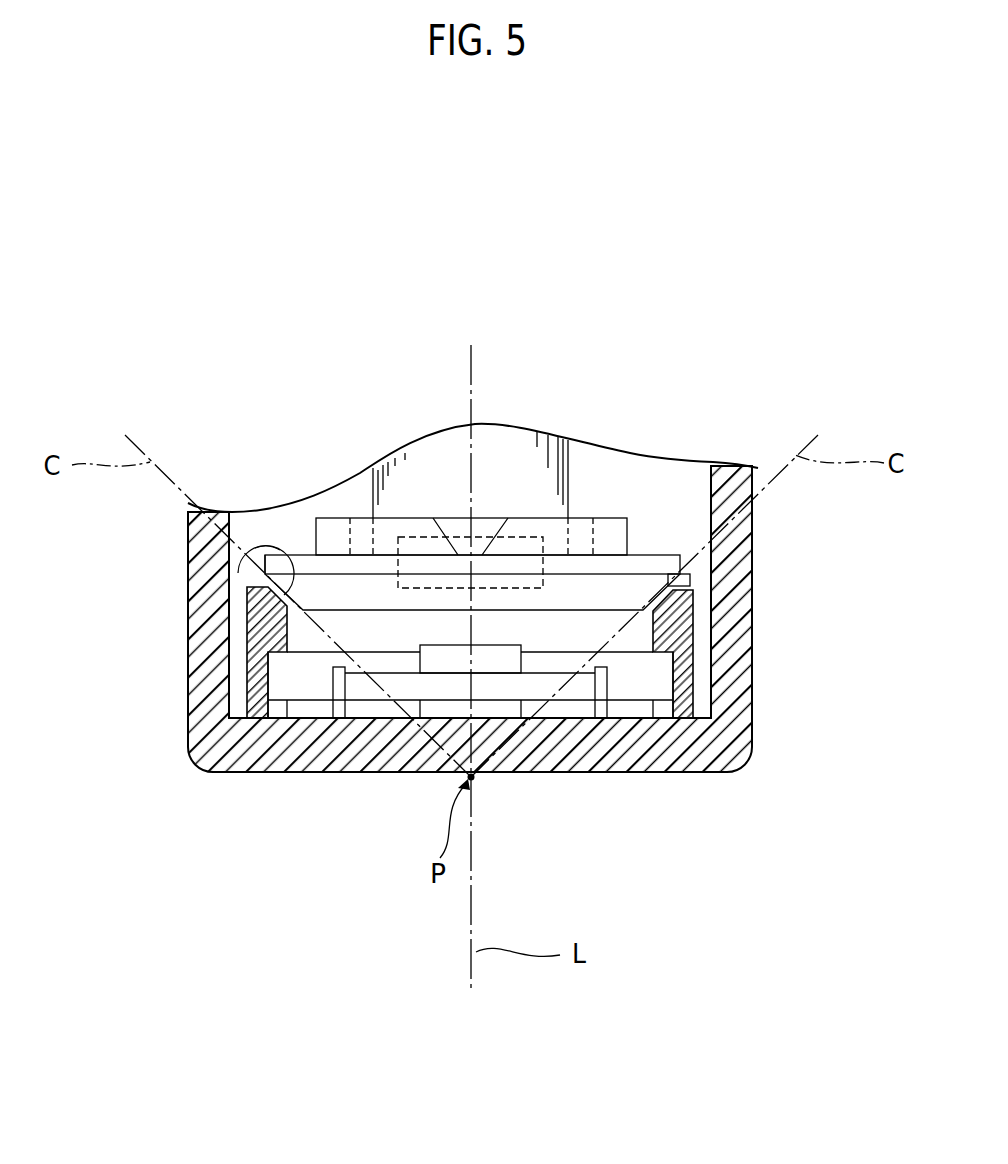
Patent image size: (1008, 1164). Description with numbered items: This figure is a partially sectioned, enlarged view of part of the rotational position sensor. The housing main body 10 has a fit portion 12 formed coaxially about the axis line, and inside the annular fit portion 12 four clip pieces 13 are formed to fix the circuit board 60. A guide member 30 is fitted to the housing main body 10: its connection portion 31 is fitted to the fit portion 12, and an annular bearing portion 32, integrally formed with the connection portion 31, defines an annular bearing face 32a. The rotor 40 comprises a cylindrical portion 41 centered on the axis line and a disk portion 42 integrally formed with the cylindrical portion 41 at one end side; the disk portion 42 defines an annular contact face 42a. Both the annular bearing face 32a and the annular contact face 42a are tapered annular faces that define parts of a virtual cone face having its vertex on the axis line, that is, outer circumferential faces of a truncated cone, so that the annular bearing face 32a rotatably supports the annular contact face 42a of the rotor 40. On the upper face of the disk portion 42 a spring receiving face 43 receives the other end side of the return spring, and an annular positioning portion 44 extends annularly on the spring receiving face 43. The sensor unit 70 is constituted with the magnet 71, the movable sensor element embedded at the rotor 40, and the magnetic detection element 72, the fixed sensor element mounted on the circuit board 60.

The housing main body 10 is at (685, 772).
The fit portion 12 is at (687, 645).
The clip pieces 13 is at (338, 675).
The guide member 30 is at (694, 590).
The connection portion 31 is at (272, 645).
The annular bearing portion 32 is at (236, 576).
The annular bearing face 32a is at (262, 546).
The rotor 40 is at (572, 478).
The cylindrical portion 41 is at (432, 458).
The disk portion 42 is at (292, 565).
The annular contact face 42a is at (686, 580).
The spring receiving face 43 is at (298, 560).
The annular positioning portion 44 is at (325, 518).
The circuit board 60 is at (499, 702).
The sensor unit 70 is at (545, 576).
The magnet 71 is at (545, 543).
The magnetic detection element 72 is at (484, 646).